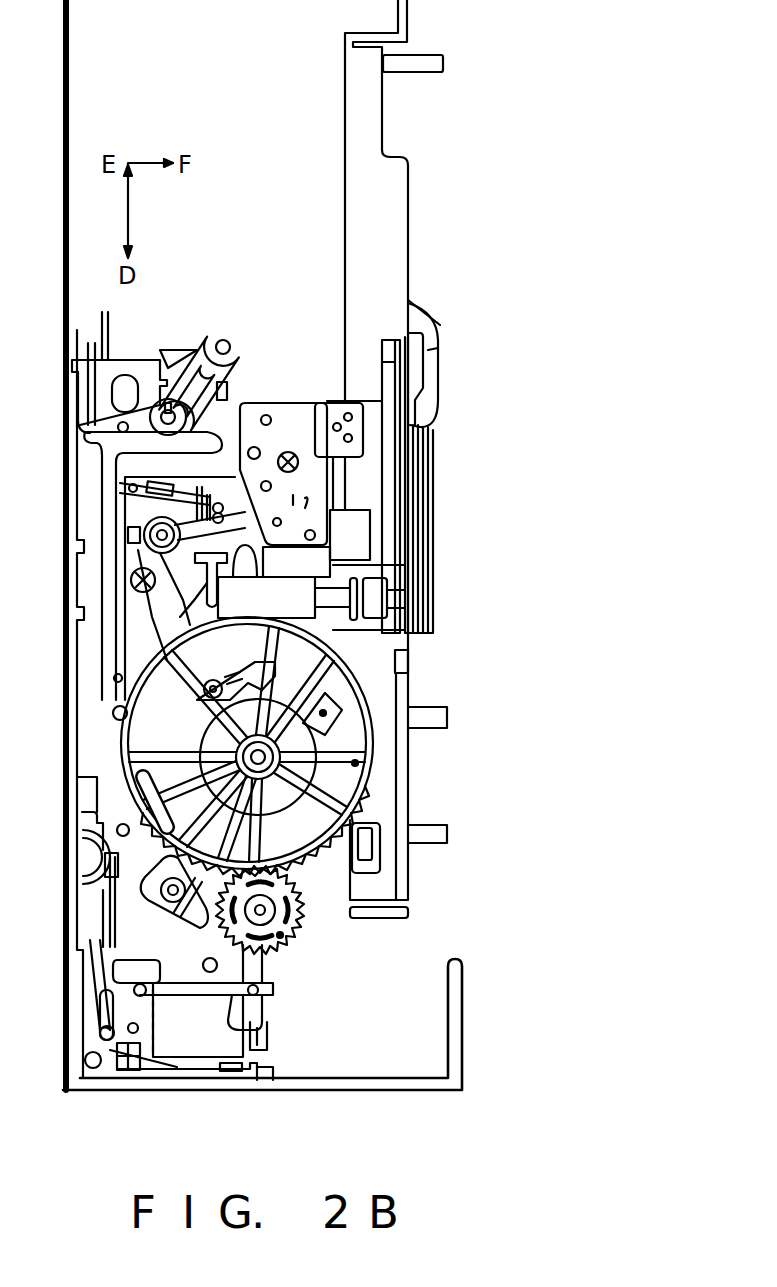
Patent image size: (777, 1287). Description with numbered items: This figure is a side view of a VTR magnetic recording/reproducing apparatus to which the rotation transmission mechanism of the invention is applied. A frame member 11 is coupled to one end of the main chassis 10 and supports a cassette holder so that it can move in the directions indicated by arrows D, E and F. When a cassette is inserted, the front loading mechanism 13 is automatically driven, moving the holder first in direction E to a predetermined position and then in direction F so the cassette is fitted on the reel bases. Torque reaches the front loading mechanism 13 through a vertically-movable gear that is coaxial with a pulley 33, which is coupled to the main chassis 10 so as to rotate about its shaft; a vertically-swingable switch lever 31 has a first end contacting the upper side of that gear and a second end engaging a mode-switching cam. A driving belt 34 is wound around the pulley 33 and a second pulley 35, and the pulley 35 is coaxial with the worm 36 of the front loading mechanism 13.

The main chassis 10 is at (360, 235).
The frame member 11 is at (95, 697).
The front loading mechanism 13 is at (383, 781).
The switch lever 31 is at (427, 387).
The pulley 33 is at (430, 455).
The driving belt 34 is at (430, 520).
The pulley 35 is at (430, 578).
The worm 36 is at (298, 603).